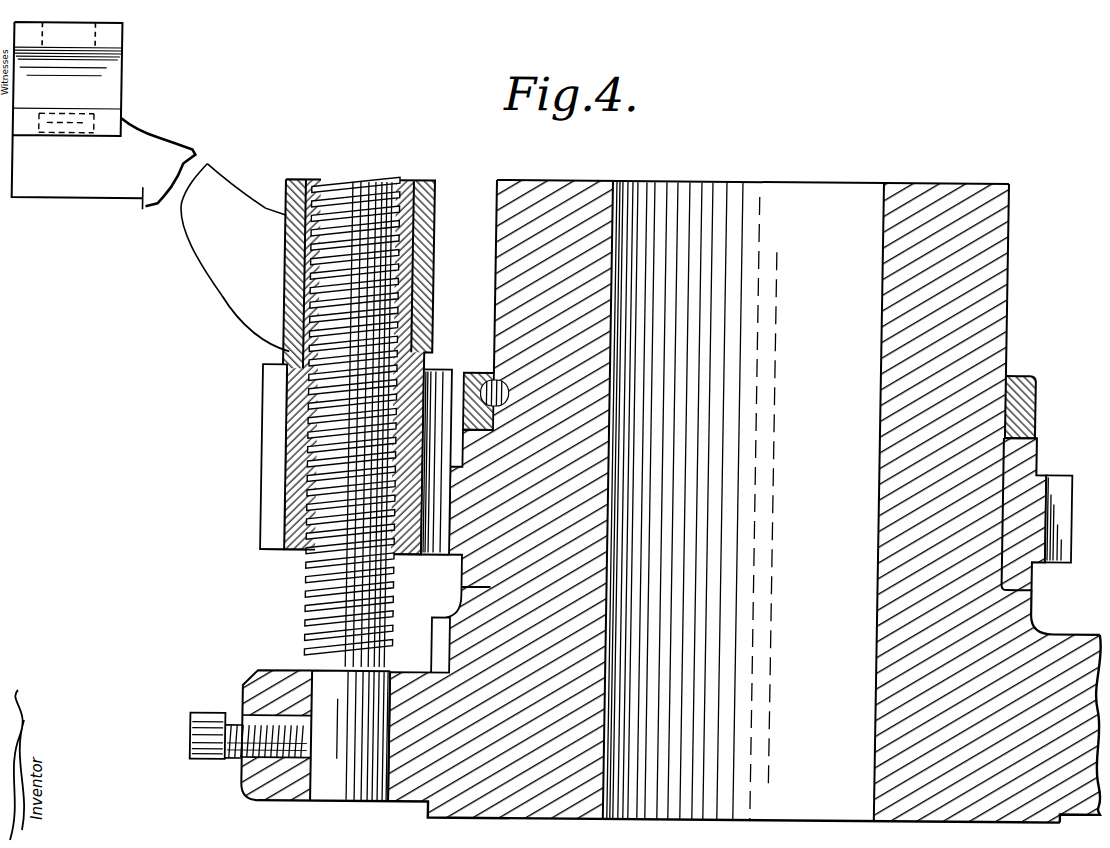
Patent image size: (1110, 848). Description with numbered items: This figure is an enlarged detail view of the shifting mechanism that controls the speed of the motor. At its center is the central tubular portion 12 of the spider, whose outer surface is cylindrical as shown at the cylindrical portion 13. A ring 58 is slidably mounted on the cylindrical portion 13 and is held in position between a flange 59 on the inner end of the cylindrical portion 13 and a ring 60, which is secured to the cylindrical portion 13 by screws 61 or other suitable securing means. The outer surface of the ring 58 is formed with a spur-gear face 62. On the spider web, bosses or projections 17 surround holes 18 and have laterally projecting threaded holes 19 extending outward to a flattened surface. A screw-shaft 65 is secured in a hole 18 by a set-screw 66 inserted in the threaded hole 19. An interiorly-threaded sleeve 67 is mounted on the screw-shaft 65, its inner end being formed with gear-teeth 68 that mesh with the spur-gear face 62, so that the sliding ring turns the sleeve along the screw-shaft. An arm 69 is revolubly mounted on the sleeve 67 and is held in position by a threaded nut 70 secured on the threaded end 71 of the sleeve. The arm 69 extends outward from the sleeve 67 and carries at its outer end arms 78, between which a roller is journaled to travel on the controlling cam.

The central tubular portion 12 is at (758, 180).
The cylindrical portion 13 is at (1012, 306).
The boss 17 is at (280, 673).
The hole 18 is at (287, 804).
The threaded hole 19 is at (266, 716).
The ring 58 is at (1035, 451).
The flange 59 is at (1030, 592).
The ring 60 is at (1040, 398).
The screw 61 is at (471, 373).
The spur-gear face 62 is at (1065, 499).
The screw-shaft 65 is at (322, 599).
The set-screw 66 is at (199, 742).
The interiorly-threaded sleeve 67 is at (293, 353).
The gear-teeth 68 is at (270, 481).
The arm 69 is at (186, 218).
The threaded nut 70 is at (298, 181).
The threaded end 71 is at (436, 188).
The arms 78 is at (116, 42).